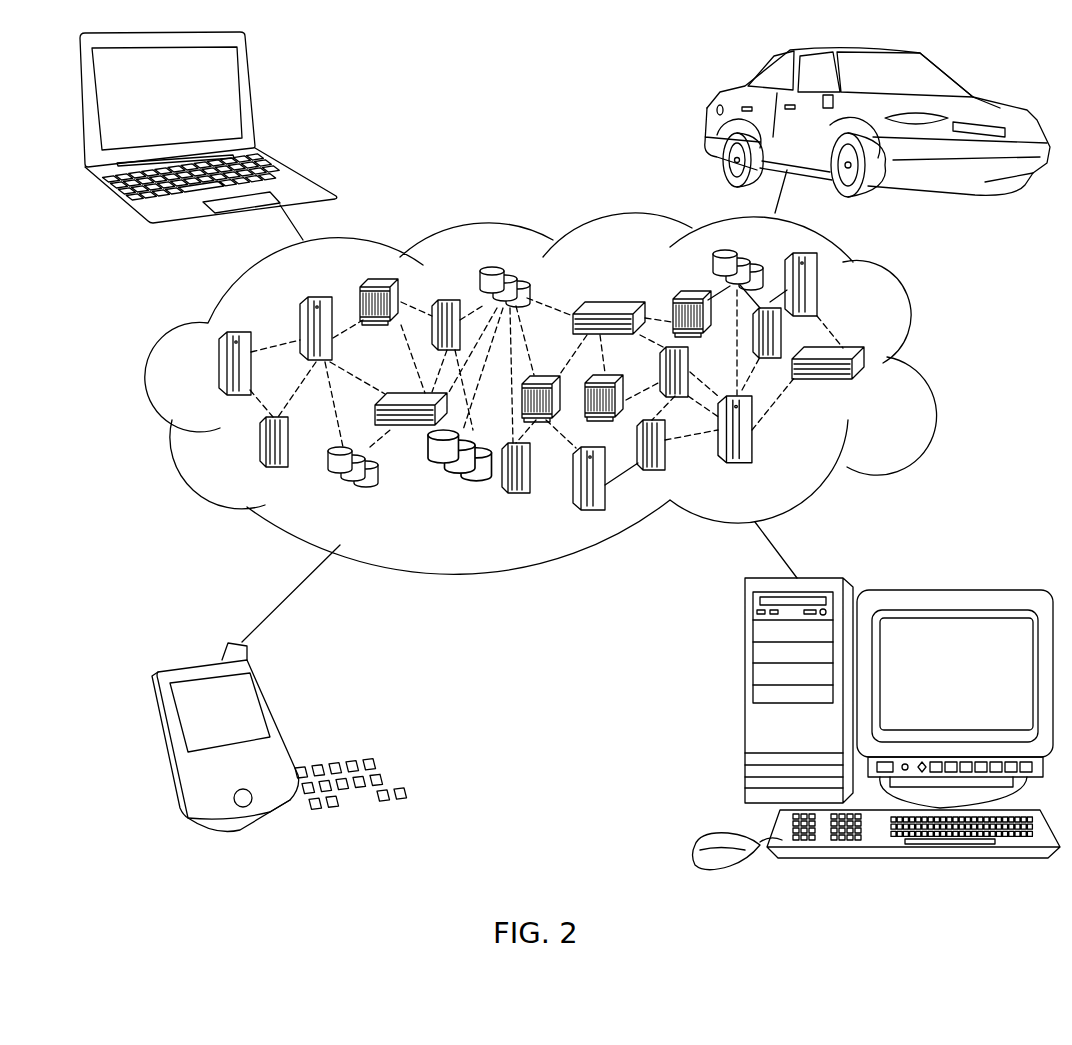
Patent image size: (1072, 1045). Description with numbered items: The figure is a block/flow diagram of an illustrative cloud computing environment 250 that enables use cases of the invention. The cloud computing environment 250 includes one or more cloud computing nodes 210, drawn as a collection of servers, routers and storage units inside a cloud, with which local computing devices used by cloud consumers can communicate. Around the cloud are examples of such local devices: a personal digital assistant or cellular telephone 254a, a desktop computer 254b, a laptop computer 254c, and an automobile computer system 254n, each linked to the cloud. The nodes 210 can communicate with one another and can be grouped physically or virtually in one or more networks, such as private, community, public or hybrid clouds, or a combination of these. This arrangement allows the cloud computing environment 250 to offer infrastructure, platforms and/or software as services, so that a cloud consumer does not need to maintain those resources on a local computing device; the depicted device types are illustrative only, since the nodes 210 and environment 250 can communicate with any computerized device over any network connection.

The cloud computing nodes 210 is at (883, 385).
The cloud computing environment 250 is at (913, 300).
The personal digital assistant (PDA) or cellular telephone 254a is at (277, 713).
The desktop computer 254b is at (746, 703).
The laptop computer 254c is at (253, 87).
The automobile computer system 254n is at (717, 103).